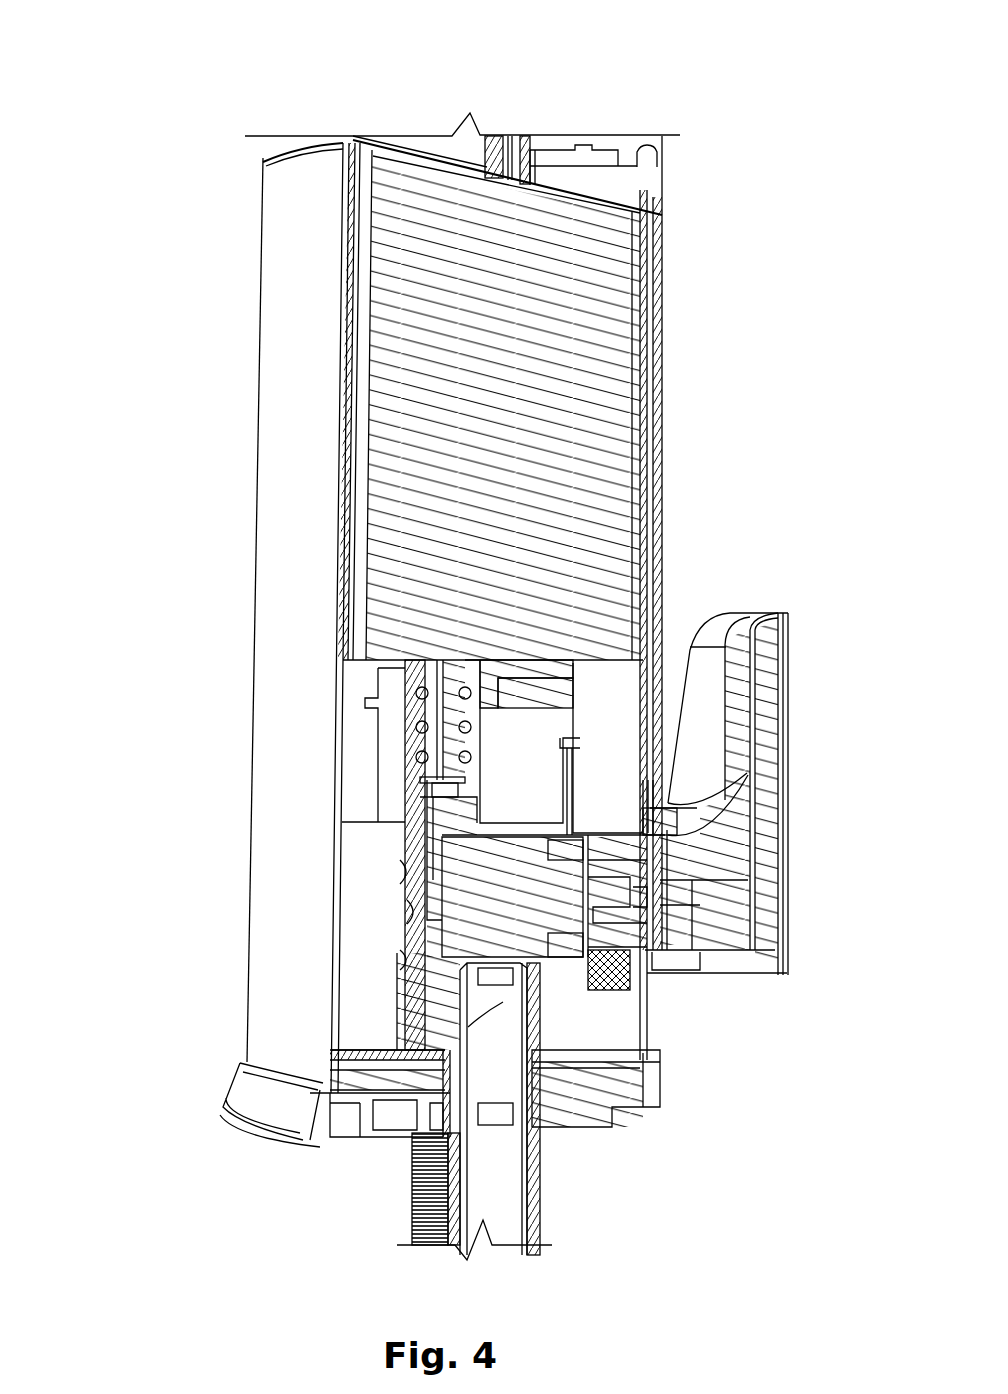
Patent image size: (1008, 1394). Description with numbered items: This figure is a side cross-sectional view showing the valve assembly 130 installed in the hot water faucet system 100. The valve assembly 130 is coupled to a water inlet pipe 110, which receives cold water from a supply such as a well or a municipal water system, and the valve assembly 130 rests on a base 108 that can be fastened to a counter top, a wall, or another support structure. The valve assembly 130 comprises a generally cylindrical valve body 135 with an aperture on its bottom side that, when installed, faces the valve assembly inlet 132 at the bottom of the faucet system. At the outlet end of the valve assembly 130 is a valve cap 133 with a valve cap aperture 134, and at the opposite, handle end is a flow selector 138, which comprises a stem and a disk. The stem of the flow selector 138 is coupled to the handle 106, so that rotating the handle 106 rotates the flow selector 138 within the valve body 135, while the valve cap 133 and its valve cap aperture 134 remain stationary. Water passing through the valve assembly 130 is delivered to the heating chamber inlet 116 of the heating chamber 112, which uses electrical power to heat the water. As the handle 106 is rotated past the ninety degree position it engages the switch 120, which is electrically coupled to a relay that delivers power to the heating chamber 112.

The hot water faucet system 100 is at (160, 48).
The handle 106 is at (786, 690).
The base 108 is at (660, 1100).
The water inlet pipe 110 is at (537, 1157).
The heating chamber 112 is at (640, 357).
The heating chamber inlet 116 is at (420, 735).
The switch 120 is at (647, 983).
The valve assembly 130 is at (390, 977).
The valve assembly inlet 132 is at (397, 1025).
The valve cap 133 is at (400, 873).
The valve cap aperture 134 is at (407, 913).
The valve body 135 is at (400, 960).
The flow selector 138 is at (787, 955).